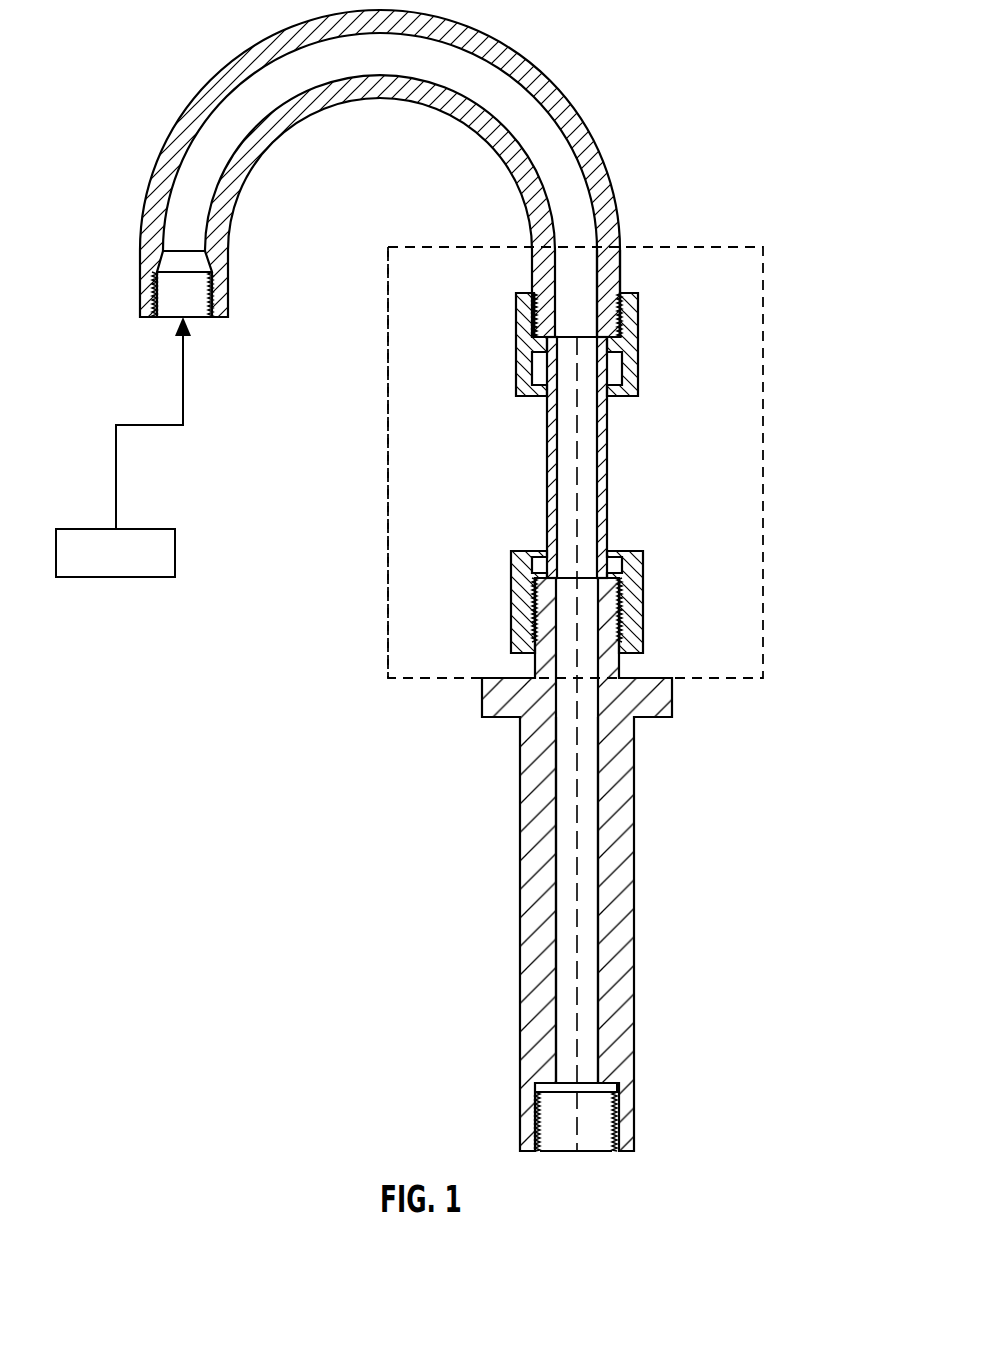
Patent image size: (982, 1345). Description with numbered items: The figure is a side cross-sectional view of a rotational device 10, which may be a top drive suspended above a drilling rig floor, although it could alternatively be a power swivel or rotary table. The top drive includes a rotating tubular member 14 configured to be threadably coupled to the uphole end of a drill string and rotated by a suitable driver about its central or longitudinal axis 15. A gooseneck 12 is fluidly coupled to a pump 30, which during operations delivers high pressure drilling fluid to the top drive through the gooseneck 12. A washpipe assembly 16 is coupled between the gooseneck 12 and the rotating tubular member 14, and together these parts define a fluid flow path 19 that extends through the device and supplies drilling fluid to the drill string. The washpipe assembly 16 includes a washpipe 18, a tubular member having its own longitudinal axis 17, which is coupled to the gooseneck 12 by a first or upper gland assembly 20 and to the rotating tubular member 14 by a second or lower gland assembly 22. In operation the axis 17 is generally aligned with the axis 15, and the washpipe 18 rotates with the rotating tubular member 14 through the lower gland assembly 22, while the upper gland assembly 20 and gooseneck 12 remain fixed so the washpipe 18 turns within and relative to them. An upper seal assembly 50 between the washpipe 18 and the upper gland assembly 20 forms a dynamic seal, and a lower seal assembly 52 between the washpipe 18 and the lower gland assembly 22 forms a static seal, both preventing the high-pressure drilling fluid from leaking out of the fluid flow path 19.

The rotational device 10 is at (387, 473).
The gooseneck 12 is at (545, 72).
The rotating tubular member 14 is at (635, 920).
The longitudinal axis 15 is at (575, 858).
The washpipe assembly 16 is at (742, 298).
The longitudinal axis 17 is at (575, 505).
The washpipe 18 is at (607, 460).
The fluid flow path 19 is at (632, 230).
The upper gland assembly 20 is at (515, 338).
The lower gland assembly 22 is at (510, 593).
The pump 30 is at (112, 577).
The upper seal assembly 50 is at (528, 365).
The lower seal assembly 52 is at (622, 563).